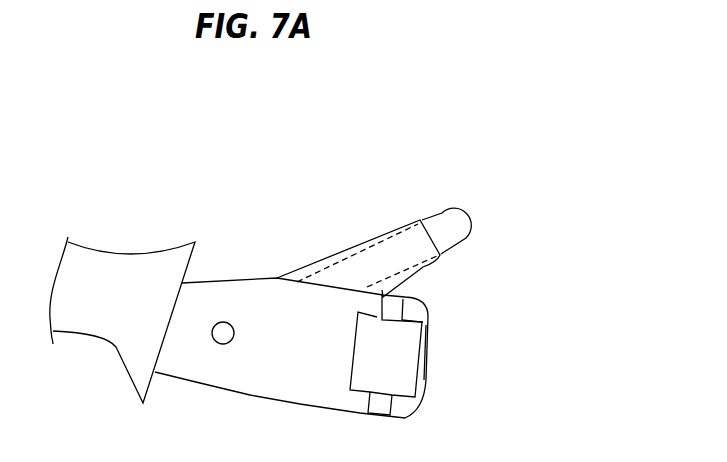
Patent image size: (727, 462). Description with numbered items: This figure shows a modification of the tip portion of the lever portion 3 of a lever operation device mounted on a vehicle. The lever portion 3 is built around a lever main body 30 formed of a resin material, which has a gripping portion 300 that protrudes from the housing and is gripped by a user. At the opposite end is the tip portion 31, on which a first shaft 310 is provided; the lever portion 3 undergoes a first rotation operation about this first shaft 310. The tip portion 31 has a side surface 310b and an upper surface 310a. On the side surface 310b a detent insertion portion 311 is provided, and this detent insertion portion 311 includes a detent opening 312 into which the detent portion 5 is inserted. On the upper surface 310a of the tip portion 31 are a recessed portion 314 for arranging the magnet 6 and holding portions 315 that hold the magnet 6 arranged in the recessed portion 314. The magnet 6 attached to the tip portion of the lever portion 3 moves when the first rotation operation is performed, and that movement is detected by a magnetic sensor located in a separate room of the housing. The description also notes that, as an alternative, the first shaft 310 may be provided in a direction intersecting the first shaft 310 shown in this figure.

The lever portion 3 is at (531, 147).
The detent portion 5 is at (450, 230).
The magnet 6 is at (418, 326).
The lever main body 30 is at (110, 247).
The tip portion 31 is at (218, 290).
The gripping portion 300 is at (83, 327).
The first shaft 310 is at (222, 336).
The upper surface 310a is at (277, 382).
The side surface 310b is at (257, 280).
The detent insertion portion 311 is at (318, 258).
The detent opening 312 is at (355, 252).
The recessed portion 314 is at (422, 342).
The holding portions 315 is at (380, 404).